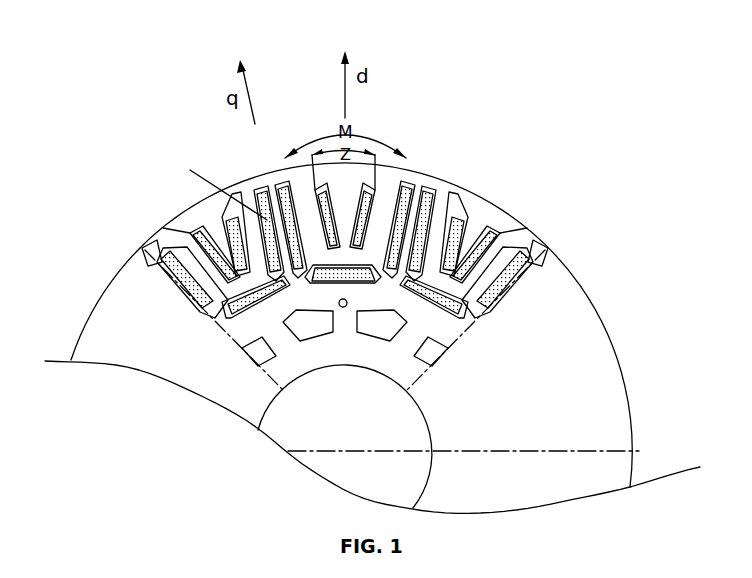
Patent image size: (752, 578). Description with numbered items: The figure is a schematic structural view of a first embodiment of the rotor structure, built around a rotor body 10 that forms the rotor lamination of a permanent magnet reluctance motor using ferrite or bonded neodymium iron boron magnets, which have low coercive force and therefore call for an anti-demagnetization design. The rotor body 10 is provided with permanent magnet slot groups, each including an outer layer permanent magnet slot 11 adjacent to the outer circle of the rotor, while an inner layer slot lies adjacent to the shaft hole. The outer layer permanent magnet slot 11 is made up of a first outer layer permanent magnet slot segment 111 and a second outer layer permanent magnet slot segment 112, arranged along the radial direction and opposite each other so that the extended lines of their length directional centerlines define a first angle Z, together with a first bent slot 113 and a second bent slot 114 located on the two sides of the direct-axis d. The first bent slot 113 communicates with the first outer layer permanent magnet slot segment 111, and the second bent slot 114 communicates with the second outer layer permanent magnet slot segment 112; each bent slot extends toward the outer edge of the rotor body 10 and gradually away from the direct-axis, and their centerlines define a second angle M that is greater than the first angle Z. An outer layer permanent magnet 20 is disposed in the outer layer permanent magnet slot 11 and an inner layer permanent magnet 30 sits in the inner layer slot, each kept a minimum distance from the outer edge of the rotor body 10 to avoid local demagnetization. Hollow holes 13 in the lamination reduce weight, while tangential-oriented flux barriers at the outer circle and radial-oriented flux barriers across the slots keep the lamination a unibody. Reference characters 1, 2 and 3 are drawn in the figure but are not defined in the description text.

The rotor 1 is at (505, 300).
The permanent magnet 2 is at (470, 240).
The magnet 3 is at (455, 268).
The rotor body 10 is at (580, 388).
The outer layer permanent magnet slot 11 is at (588, 104).
The hollow holes 13 is at (262, 352).
The outer layer permanent magnet 20 is at (455, 273).
The inner layer permanent magnet 30 is at (380, 225).
The first outer layer permanent magnet slot segment 111 is at (162, 308).
The second outer layer permanent magnet slot segment 112 is at (370, 188).
The first bent slot 113 is at (322, 188).
The second bent slot 114 is at (448, 214).